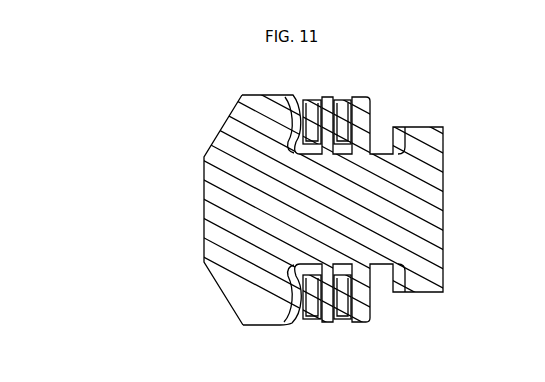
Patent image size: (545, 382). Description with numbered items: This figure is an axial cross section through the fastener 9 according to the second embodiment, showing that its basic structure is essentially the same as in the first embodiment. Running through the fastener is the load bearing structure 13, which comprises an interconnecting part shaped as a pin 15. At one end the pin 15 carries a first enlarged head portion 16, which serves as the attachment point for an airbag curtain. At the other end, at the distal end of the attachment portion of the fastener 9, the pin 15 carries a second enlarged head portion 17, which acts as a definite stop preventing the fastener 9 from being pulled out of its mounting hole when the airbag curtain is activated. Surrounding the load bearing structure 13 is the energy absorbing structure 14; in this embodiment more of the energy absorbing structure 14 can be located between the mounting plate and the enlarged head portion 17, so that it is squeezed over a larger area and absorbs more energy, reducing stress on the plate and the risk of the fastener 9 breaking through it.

The fastener 9 is at (217, 111).
The load bearing structure 13 is at (454, 167).
The energy absorbing structure 14 is at (329, 106).
The pin 15 is at (343, 243).
The first enlarged head portion 16 is at (432, 217).
The second enlarged head portion 17 is at (217, 249).